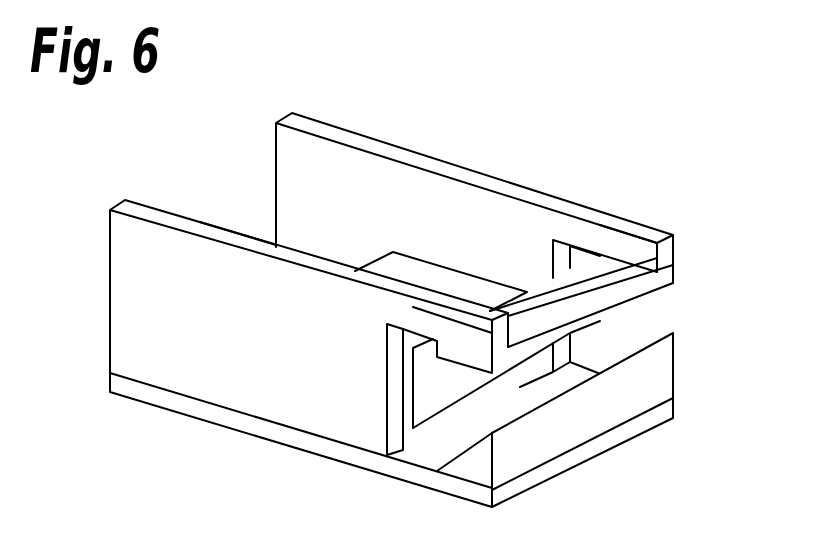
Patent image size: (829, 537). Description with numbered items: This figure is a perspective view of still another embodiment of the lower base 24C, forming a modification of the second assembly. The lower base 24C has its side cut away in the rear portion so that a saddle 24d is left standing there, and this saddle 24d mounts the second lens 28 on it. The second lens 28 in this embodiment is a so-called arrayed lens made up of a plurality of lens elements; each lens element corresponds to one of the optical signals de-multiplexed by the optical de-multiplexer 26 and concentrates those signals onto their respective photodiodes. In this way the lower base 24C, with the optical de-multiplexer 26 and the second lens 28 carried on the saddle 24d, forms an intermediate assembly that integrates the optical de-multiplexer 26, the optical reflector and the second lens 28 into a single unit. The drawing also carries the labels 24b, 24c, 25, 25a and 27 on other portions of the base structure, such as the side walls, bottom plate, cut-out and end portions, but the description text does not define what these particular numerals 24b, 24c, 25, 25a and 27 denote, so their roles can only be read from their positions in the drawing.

The rear side wall 24b is at (393, 152).
The front side wall 24c is at (187, 397).
The lower base 24C is at (262, 202).
The saddle 24d is at (633, 252).
The bottom plate 25 is at (265, 440).
The slot 25a is at (430, 457).
The optical de-multiplexer 26 is at (395, 270).
The end wall 27 is at (577, 428).
The second lens 28 is at (632, 293).